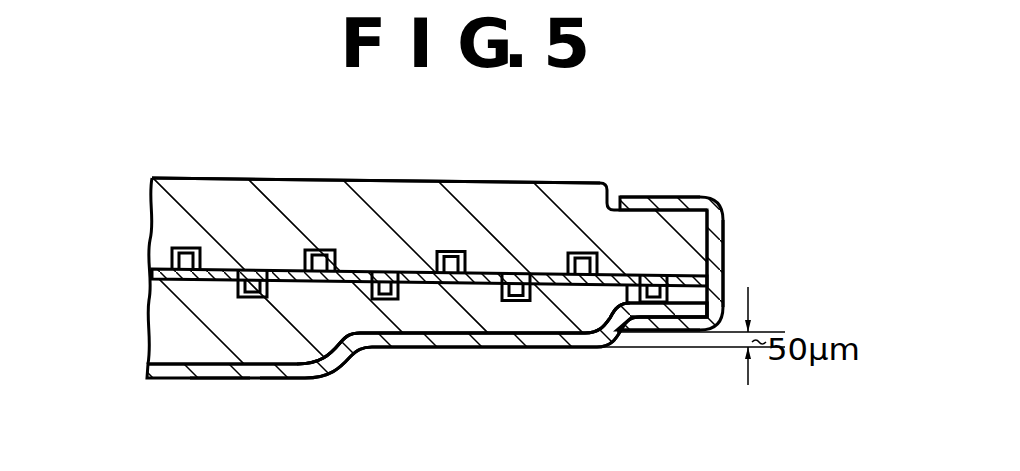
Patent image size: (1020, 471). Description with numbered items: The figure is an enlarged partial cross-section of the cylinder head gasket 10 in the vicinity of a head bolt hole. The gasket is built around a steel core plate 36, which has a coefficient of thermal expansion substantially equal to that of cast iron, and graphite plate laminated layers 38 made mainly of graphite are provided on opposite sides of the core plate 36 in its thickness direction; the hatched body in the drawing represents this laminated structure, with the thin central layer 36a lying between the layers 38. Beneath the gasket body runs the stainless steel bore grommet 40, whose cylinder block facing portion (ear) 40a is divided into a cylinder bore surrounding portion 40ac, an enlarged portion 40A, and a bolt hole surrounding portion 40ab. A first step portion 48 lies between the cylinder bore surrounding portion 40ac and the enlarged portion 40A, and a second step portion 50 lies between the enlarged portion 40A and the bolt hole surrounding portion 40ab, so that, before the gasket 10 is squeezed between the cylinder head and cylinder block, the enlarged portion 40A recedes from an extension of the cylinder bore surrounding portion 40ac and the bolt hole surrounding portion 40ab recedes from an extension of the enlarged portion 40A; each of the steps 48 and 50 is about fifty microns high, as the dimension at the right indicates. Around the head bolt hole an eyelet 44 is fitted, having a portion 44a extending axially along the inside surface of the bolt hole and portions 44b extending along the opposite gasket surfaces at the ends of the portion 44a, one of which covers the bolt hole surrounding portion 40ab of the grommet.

The cylinder head gasket 10 is at (550, 183).
The steel core plate 36 is at (170, 267).
The wiring layer of circuit board 36a is at (208, 276).
The graphite plate laminated layers 38 is at (493, 198).
The bore grommet 40 is at (163, 377).
The cylinder block facing portion 40a is at (222, 371).
The cylinder bore surrounding portion 40ac is at (283, 371).
The enlarged portion 40A is at (480, 340).
The bolt hole surrounding portion 40ab is at (690, 300).
The eyelet 44 is at (726, 212).
The axially extending portion of eyelet 44a is at (715, 266).
The surface extending portions of eyelet 44b is at (643, 204).
The first step portion 48 is at (343, 353).
The second step portion 50 is at (615, 338).